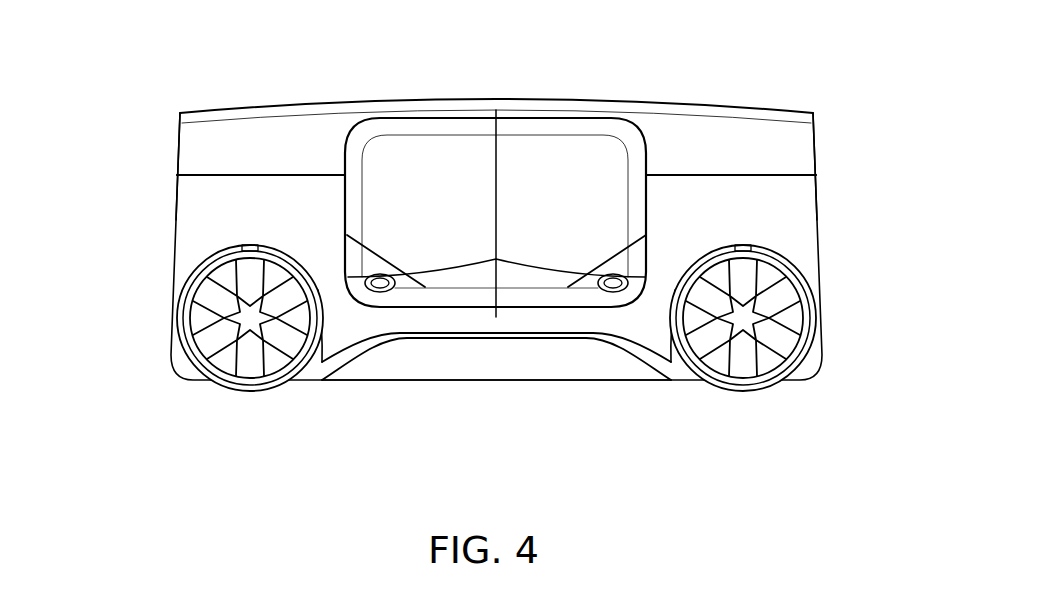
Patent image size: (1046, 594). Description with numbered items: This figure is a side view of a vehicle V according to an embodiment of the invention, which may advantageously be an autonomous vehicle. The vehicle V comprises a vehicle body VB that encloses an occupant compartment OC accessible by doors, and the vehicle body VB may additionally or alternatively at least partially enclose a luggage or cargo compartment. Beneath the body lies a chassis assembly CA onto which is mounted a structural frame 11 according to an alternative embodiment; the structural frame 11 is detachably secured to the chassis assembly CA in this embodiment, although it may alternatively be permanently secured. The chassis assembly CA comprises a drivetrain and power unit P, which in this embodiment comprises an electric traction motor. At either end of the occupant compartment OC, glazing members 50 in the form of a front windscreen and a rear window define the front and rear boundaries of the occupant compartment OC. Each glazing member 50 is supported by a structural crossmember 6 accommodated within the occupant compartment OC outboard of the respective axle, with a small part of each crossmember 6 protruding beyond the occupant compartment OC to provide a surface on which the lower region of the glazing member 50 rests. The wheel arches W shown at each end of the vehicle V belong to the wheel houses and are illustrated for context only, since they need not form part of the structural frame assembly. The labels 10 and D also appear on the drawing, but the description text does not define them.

The vehicle 10 is at (240, 62).
The vehicle V is at (790, 65).
The vehicle body VB is at (826, 152).
The glazing members 50 is at (173, 142).
The structural frame 11 is at (170, 156).
The structural crossmembers 6 is at (177, 177).
The occupant compartment OC is at (538, 180).
The wheel arches W is at (173, 327).
The chassis assembly CA is at (398, 395).
The drivetrain and power unit P is at (497, 398).
The drive unit D is at (612, 395).